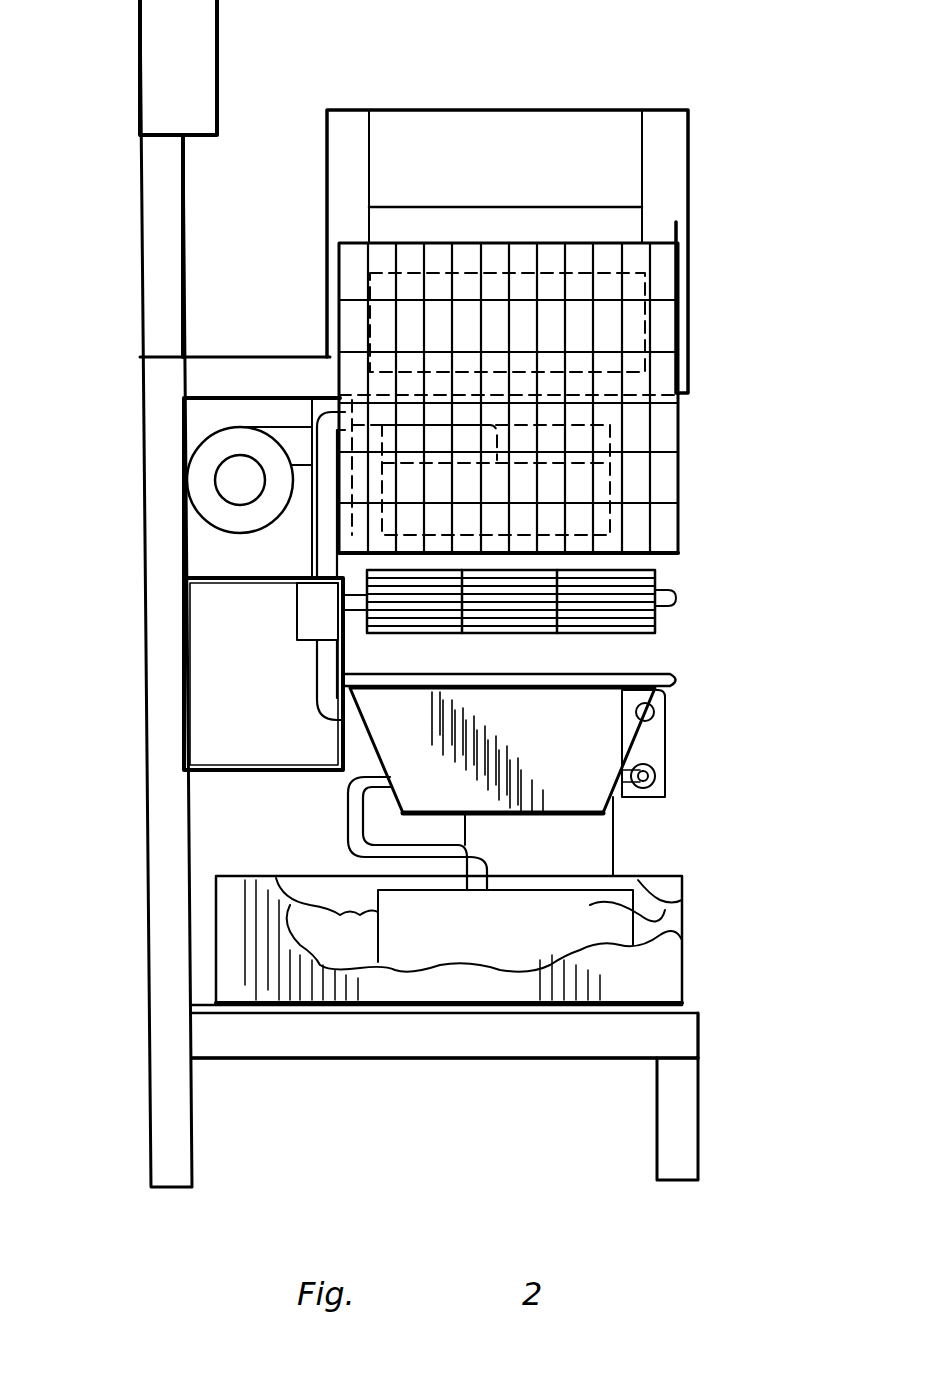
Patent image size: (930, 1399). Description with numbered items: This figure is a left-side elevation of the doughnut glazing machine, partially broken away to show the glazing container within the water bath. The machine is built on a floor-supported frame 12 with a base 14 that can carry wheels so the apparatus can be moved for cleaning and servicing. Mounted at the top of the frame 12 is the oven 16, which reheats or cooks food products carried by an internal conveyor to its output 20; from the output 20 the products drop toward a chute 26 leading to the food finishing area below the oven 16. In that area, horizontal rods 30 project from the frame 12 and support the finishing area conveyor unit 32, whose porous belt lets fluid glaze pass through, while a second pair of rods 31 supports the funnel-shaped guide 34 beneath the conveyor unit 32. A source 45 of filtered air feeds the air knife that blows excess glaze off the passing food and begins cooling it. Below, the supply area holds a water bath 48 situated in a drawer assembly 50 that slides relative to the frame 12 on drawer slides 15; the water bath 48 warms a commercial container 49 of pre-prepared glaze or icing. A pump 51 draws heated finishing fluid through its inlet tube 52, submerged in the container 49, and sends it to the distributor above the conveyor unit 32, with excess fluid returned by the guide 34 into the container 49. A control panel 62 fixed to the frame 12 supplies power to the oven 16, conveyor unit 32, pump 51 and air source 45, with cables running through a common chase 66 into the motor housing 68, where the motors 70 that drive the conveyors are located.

The frame 12 is at (150, 705).
The base 14 is at (688, 1140).
The drawer slides 15 is at (688, 1005).
The oven 16 is at (660, 118).
The output 20 is at (547, 222).
The chute 26 is at (683, 430).
The horizontal rods 30 is at (673, 600).
The second pair of rods 31 is at (673, 678).
The finishing area conveyor unit 32 is at (620, 582).
The funnel-shaped guide 34 is at (600, 742).
The source of filtered air 45 is at (222, 483).
The water bath 48 is at (340, 933).
The commercial container 49 is at (593, 915).
The drawer assembly 50 is at (663, 982).
The pump 51 is at (660, 732).
The inlet tube 52 is at (485, 857).
The control panel 62 is at (148, 50).
The common chase 66 is at (152, 275).
The motor housing 68 is at (212, 578).
The motors 70 is at (308, 620).